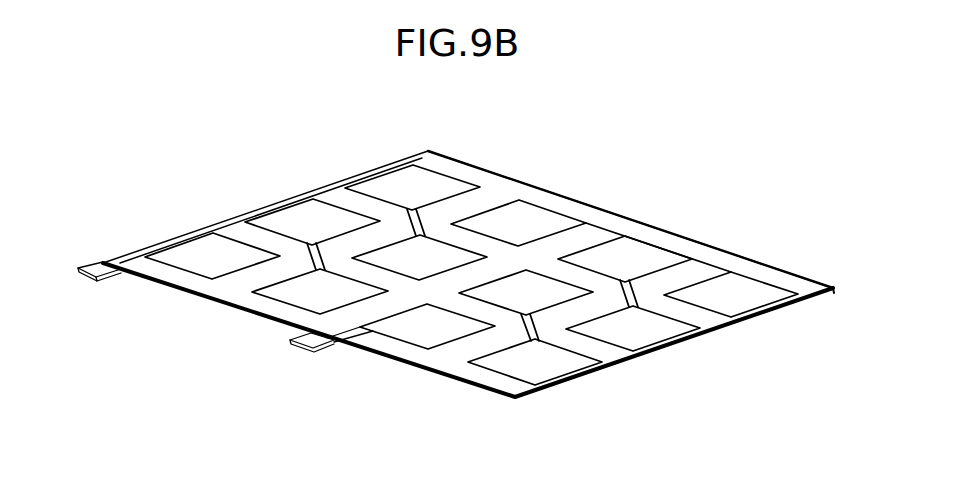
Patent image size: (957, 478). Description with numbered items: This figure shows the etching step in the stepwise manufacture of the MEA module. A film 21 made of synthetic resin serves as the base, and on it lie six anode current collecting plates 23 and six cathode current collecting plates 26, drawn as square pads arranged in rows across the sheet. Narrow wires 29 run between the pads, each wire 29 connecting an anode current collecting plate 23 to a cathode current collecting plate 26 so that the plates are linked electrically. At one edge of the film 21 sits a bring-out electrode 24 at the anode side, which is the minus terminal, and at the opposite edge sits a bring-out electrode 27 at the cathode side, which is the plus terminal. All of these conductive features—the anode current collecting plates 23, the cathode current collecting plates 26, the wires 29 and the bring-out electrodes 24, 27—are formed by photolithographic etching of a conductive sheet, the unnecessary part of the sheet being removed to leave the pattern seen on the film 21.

The film 21 is at (710, 322).
The anode current collecting plate 23 is at (548, 222).
The bring-out electrode 24 is at (292, 339).
The cathode current collecting plate 26 is at (193, 245).
The bring-out electrode 27 is at (104, 262).
The wire 29 is at (316, 256).